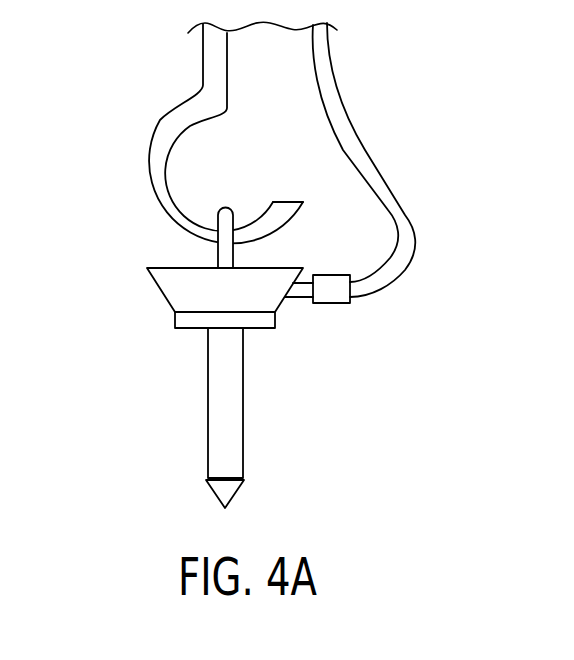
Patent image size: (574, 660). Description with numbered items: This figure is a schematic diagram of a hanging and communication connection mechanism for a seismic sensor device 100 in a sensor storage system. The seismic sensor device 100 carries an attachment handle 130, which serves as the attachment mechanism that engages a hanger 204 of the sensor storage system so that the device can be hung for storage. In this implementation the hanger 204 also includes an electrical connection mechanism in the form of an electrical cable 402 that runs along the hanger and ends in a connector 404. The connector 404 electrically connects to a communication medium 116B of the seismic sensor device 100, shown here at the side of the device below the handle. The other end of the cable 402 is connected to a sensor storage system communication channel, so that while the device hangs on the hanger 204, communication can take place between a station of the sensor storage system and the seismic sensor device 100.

The seismic sensor device 100 is at (179, 376).
The attachment handle 130 is at (226, 207).
The hanger 204 is at (148, 183).
The electrical cable 402 is at (358, 133).
The connector 404 is at (332, 303).
The communication medium 116B is at (300, 298).